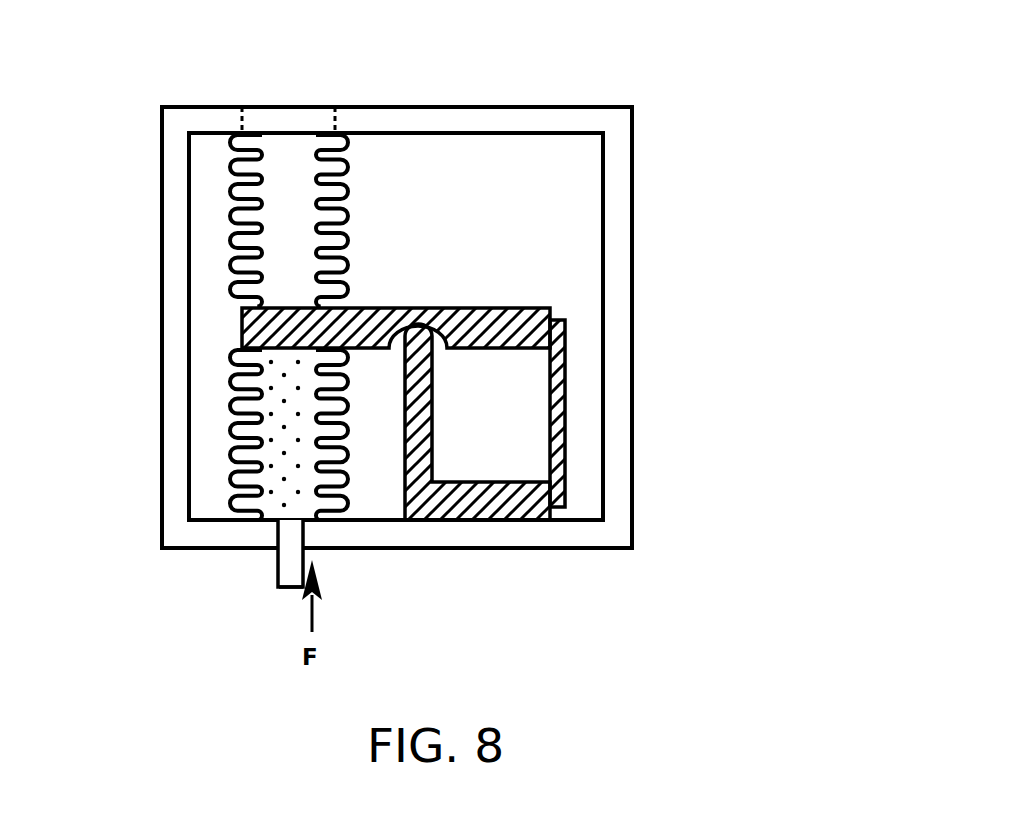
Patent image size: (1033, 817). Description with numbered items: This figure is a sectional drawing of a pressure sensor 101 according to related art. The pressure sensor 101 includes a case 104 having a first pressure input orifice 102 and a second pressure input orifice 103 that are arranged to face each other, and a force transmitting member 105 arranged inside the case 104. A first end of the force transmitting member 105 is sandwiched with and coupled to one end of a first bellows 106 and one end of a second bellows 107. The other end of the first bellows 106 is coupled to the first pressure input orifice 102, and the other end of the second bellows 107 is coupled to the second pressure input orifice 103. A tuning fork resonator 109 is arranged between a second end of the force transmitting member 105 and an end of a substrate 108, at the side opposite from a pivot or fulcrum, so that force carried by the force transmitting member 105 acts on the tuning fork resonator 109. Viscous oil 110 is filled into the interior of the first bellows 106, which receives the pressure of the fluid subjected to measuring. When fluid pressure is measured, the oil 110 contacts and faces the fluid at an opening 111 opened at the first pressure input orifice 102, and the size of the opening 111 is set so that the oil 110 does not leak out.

The pressure sensor 101 is at (652, 541).
The first pressure input orifice 102 is at (278, 573).
The second pressure input orifice 103 is at (280, 120).
The case 104 is at (498, 532).
The force transmitting member 105 is at (490, 307).
The first bellows 106 is at (243, 458).
The second bellows 107 is at (345, 186).
The substrate 108 is at (423, 521).
The tuning fork resonator 109 is at (567, 395).
The viscous oil 110 is at (297, 390).
The opening 111 is at (292, 588).